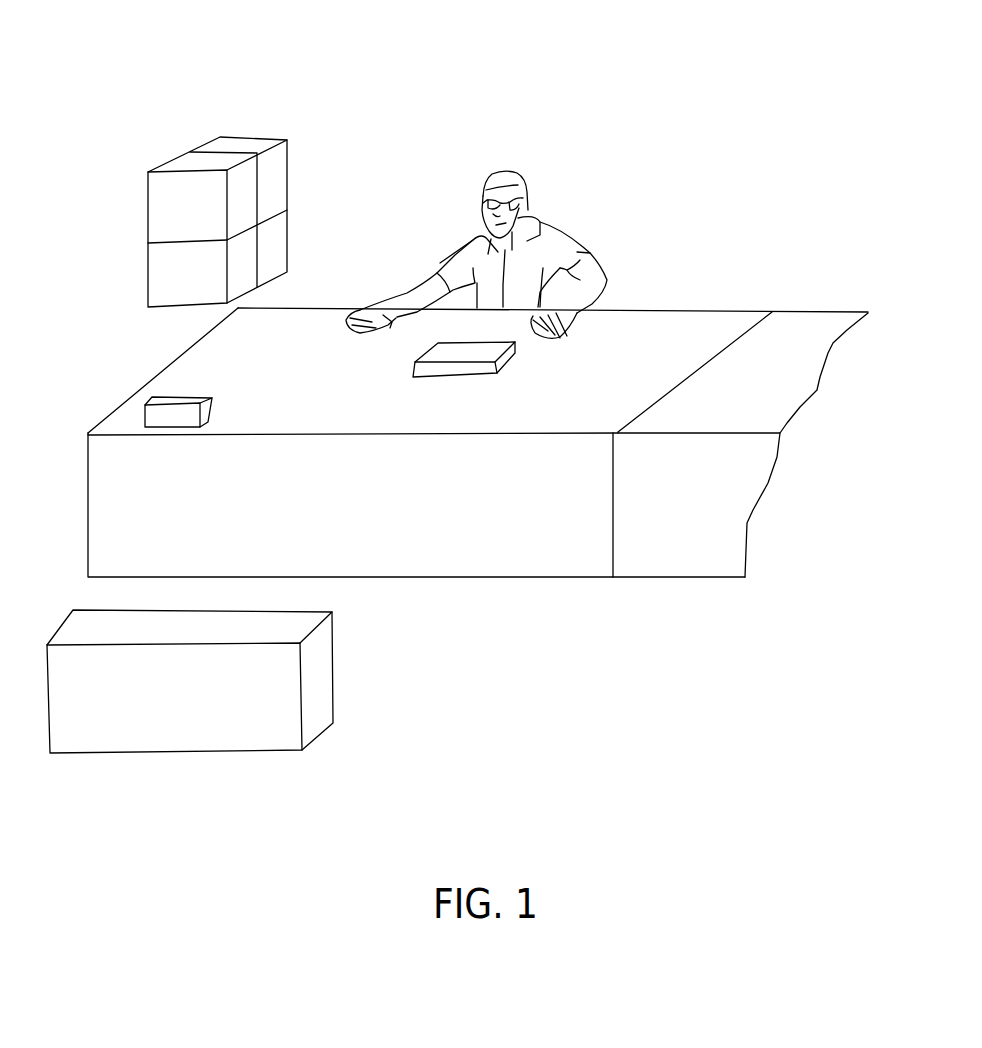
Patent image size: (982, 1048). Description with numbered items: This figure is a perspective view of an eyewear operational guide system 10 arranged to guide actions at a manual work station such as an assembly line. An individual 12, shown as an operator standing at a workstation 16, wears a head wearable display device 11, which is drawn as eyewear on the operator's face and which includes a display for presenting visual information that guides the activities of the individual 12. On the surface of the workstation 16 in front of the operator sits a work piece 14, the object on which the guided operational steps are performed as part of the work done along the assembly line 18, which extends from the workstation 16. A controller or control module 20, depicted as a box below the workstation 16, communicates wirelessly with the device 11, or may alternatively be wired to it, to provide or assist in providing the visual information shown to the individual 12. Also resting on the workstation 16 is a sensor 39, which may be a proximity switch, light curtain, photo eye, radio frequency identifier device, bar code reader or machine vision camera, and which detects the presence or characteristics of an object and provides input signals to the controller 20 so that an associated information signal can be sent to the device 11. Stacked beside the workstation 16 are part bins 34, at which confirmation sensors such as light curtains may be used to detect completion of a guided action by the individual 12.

The eyewear operational guide system 10 is at (393, 69).
The head wearable display device 11 is at (483, 203).
The individual 12 is at (553, 230).
The work piece 14 is at (487, 352).
The workstation 16 is at (410, 533).
The assembly line 18 is at (668, 578).
The controller 20 is at (318, 682).
The part bins 34 is at (288, 170).
The sensors 39 is at (177, 397).